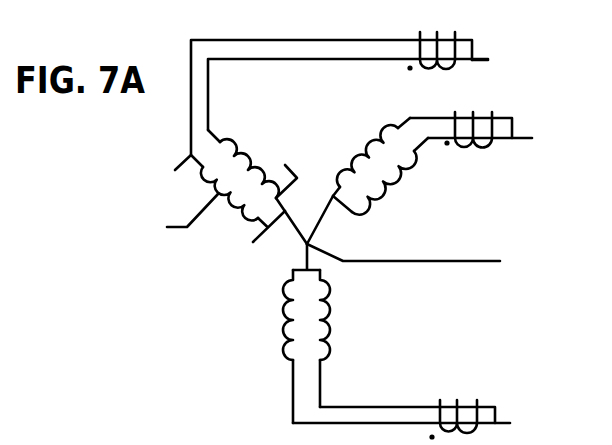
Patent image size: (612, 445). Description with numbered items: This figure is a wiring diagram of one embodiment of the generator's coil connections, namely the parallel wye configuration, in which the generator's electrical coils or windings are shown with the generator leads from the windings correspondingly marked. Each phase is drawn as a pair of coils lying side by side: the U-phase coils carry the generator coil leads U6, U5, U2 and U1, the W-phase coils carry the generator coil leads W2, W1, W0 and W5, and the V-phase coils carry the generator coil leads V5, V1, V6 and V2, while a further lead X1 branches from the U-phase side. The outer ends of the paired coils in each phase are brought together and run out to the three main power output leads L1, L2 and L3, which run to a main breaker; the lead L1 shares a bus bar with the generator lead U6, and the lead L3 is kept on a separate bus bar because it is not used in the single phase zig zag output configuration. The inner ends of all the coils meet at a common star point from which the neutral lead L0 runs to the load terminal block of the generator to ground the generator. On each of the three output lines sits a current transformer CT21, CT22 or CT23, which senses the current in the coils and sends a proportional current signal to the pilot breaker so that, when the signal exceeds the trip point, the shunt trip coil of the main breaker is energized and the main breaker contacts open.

The current transformer CT21 is at (440, 38).
The current transformer CT22 is at (461, 117).
The current transformer CT23 is at (407, 403).
The main power output lead L1 is at (498, 64).
The main power output lead L2 is at (496, 139).
The main power output lead L3 is at (417, 427).
The neutral lead L0 is at (420, 259).
The generator coil lead U6 is at (248, 157).
The generator coil lead U5 is at (280, 171).
The generator coil lead U2 is at (198, 188).
The generator coil lead U1 is at (256, 243).
The auxiliary terminal X1 is at (177, 218).
The generator coil lead W2 is at (398, 128).
The generator coil lead W1 is at (330, 179).
The generator coil lead W0 is at (407, 176).
The generator coil lead W5 is at (369, 218).
The generator coil lead V5 is at (271, 315).
The generator coil lead V1 is at (343, 315).
The generator coil lead V6 is at (271, 391).
The generator coil lead V2 is at (342, 383).